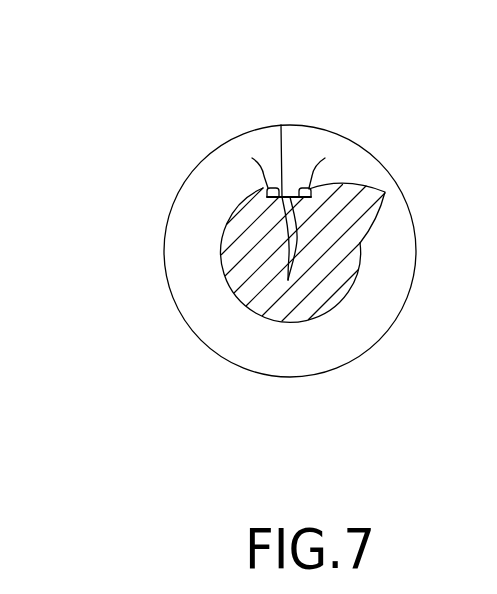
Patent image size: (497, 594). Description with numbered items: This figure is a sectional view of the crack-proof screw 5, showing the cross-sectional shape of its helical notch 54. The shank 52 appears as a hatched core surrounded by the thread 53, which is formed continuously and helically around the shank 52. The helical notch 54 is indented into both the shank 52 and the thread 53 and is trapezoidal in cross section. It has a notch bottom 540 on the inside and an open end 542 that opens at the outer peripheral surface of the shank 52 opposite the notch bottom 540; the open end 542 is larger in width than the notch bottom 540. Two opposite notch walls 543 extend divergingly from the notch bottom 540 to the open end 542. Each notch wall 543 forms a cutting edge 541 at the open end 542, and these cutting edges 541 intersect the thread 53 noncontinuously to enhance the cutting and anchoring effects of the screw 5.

The crack-proof screw 5 is at (133, 196).
The shank 52 is at (357, 288).
The thread 53 is at (290, 197).
The helical notch 54 is at (260, 147).
The notch bottom 540 is at (281, 125).
The cutting edge 541 is at (252, 158).
The open end 542 is at (313, 172).
The notch wall 543 is at (288, 280).